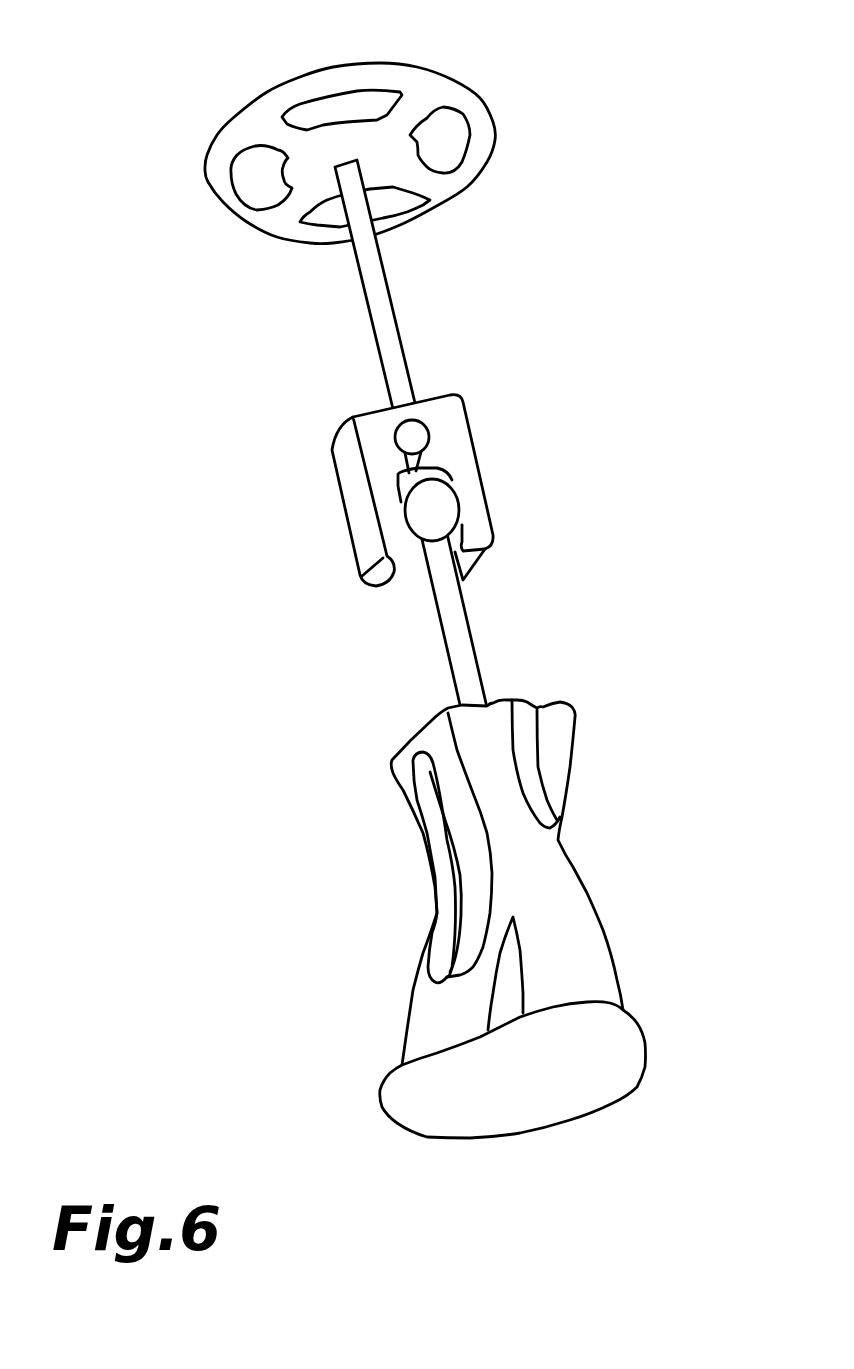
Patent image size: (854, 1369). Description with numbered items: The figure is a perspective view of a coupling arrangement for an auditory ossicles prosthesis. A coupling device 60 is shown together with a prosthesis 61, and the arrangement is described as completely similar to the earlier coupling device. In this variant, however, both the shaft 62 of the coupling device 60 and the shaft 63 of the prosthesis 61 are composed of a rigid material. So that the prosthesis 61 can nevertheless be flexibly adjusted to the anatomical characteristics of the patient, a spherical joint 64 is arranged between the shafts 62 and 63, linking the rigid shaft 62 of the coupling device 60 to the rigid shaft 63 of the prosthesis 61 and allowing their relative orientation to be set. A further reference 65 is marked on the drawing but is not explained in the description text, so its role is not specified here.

The coupling device 60 is at (541, 856).
The prosthesis 61 is at (425, 122).
The shaft of the coupling device 62 is at (453, 633).
The shaft of the prosthesis 63 is at (393, 334).
The spherical joint 64 is at (505, 477).
The grip recess 65 is at (397, 800).